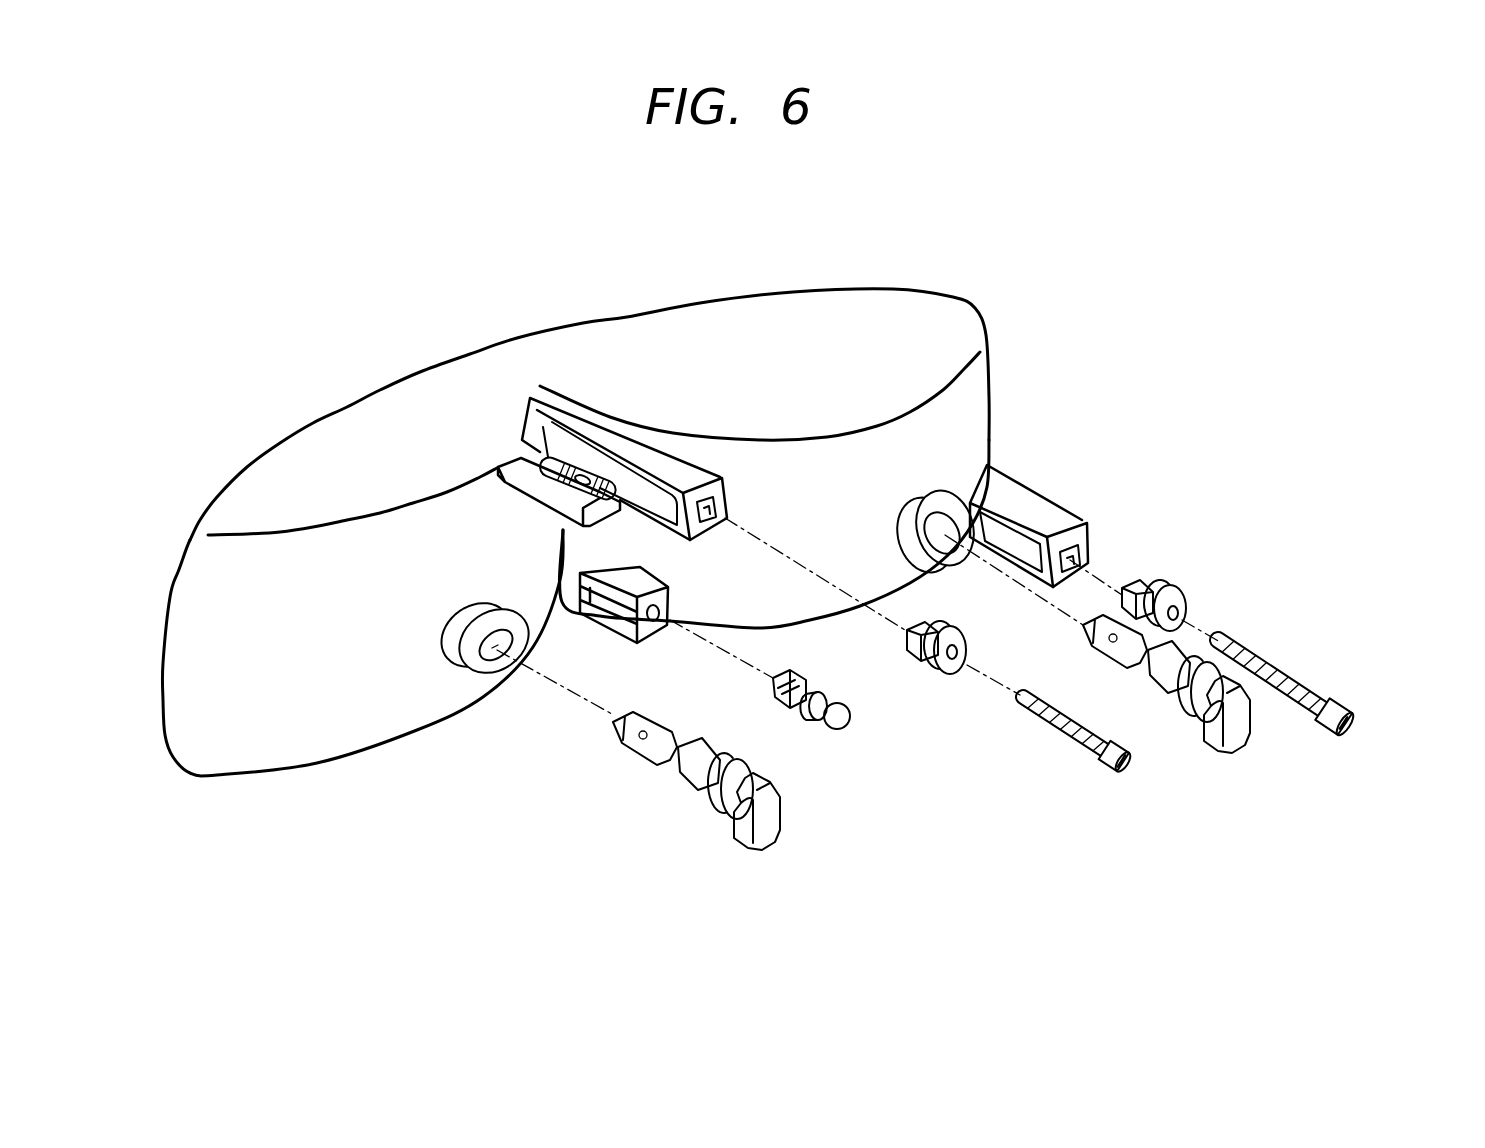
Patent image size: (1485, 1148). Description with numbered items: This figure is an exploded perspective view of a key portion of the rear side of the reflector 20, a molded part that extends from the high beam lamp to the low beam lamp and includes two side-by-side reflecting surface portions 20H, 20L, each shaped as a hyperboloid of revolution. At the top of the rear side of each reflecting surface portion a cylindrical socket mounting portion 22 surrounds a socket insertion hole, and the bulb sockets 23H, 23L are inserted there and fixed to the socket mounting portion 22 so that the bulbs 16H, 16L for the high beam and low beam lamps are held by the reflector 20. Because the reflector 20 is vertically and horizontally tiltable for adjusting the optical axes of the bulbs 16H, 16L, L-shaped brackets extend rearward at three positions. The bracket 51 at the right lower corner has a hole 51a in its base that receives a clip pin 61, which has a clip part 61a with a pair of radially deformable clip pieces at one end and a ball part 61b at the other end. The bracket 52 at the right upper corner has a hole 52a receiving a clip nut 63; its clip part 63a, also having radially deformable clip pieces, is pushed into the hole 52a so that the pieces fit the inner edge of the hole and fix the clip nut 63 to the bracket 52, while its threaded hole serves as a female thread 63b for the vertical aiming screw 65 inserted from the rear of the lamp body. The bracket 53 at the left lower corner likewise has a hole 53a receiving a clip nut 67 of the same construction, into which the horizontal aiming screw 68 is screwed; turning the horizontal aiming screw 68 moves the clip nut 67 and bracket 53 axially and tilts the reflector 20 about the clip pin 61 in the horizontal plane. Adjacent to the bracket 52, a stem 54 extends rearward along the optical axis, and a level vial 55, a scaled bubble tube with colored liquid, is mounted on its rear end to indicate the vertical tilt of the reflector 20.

The reflector 20 is at (516, 363).
The reflecting surface portion 20H is at (297, 747).
The reflecting surface portion 20L is at (950, 320).
The socket mounting portion 22 is at (485, 665).
The L-shaped bracket 51 is at (647, 643).
The hole 51a is at (668, 615).
The bracket 52 is at (673, 463).
The hole 52a is at (722, 503).
The bracket 53 is at (1040, 517).
The hole 53a is at (1080, 557).
The stem 54 is at (522, 474).
The level vial 55 is at (593, 480).
The clip pin 61 is at (845, 702).
The clip part 61a is at (790, 672).
The ball part 61b is at (837, 730).
The clip nut 63 is at (958, 634).
The clip part 63a is at (923, 624).
The female thread 63b is at (958, 665).
The vertical aiming screw 65 is at (1043, 727).
The clip nut 67 is at (1187, 588).
The horizontal aiming screw 68 is at (1300, 680).
The bulb 16H is at (640, 753).
The bulb 16L is at (1120, 663).
The bulb socket 23H is at (745, 834).
The bulb socket 23L is at (1207, 748).